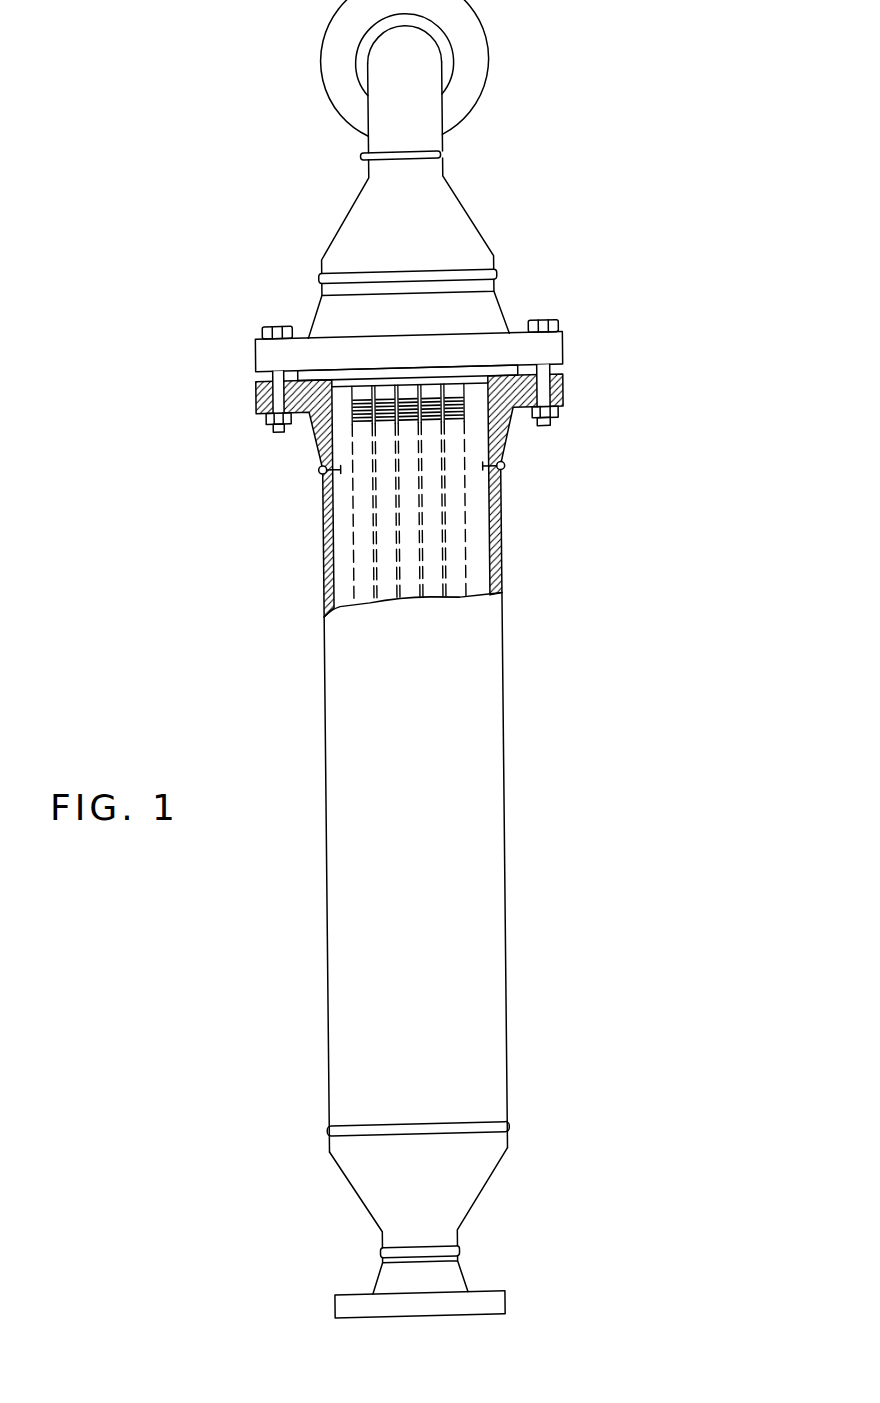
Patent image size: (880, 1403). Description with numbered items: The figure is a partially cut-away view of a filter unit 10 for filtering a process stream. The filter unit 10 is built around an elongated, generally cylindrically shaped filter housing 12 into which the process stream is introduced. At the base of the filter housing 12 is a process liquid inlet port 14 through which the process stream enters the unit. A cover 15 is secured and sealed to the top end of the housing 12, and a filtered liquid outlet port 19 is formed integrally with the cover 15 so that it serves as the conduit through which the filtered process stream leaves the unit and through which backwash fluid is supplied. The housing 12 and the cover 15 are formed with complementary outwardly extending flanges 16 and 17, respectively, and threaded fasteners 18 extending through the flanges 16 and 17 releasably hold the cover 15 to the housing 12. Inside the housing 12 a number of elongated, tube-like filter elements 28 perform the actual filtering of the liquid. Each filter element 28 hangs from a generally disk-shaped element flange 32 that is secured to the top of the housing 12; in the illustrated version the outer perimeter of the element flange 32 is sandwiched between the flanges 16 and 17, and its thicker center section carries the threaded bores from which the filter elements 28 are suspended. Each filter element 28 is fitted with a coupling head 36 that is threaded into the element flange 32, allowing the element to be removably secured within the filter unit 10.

The filter unit 10 is at (184, 450).
The filter housing 12 is at (420, 699).
The process liquid inlet port 14 is at (449, 1303).
The cover 15 is at (412, 328).
The flange 16 is at (566, 394).
The flange 17 is at (552, 350).
The threaded fasteners 18 is at (270, 328).
The filtered liquid outlet port 19 is at (452, 69).
The filter elements 28 is at (443, 419).
The element flange 32 is at (268, 376).
The coupling head 36 is at (359, 393).